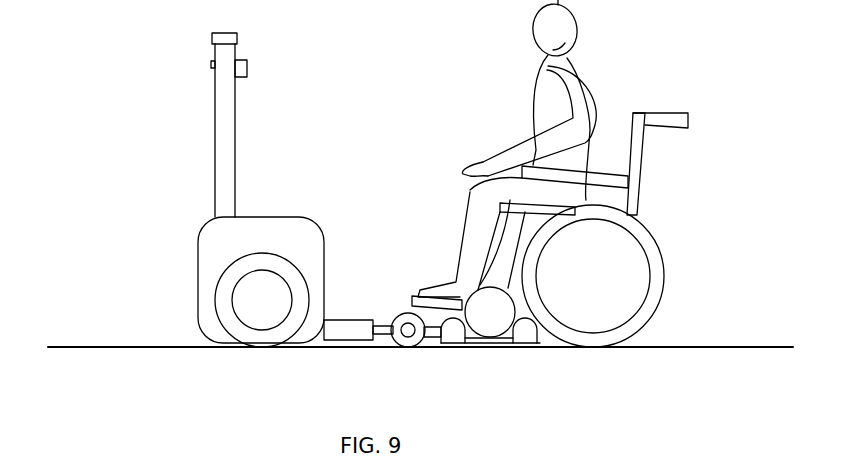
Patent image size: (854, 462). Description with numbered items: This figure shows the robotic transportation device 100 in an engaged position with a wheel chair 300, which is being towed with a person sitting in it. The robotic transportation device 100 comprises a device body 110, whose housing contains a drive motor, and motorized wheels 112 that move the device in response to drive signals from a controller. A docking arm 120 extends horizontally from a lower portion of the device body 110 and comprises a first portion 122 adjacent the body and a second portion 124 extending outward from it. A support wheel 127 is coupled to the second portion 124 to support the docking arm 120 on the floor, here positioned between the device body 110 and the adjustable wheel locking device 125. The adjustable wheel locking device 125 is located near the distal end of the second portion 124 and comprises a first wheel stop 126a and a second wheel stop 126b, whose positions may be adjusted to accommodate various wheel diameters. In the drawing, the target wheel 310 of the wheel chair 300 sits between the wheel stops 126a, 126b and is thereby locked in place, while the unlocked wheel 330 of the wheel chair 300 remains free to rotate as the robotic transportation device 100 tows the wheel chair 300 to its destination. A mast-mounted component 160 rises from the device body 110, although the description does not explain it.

The robotic transportation device 100 is at (172, 142).
The device body 110 is at (198, 265).
The motorized wheels 112 is at (262, 347).
The docking arm 120 is at (393, 255).
The first portion 122 is at (346, 320).
The second portion 124 is at (388, 326).
The adjustable wheel locking device 125 is at (520, 362).
The first wheel stop 126a is at (532, 343).
The second wheel stop 126b is at (455, 343).
The support wheel 127 is at (408, 347).
The sensor mast head 160 is at (237, 40).
The wheel chair 300 is at (697, 106).
The target wheels 310 is at (490, 338).
The unlocked wheels 330 is at (662, 290).